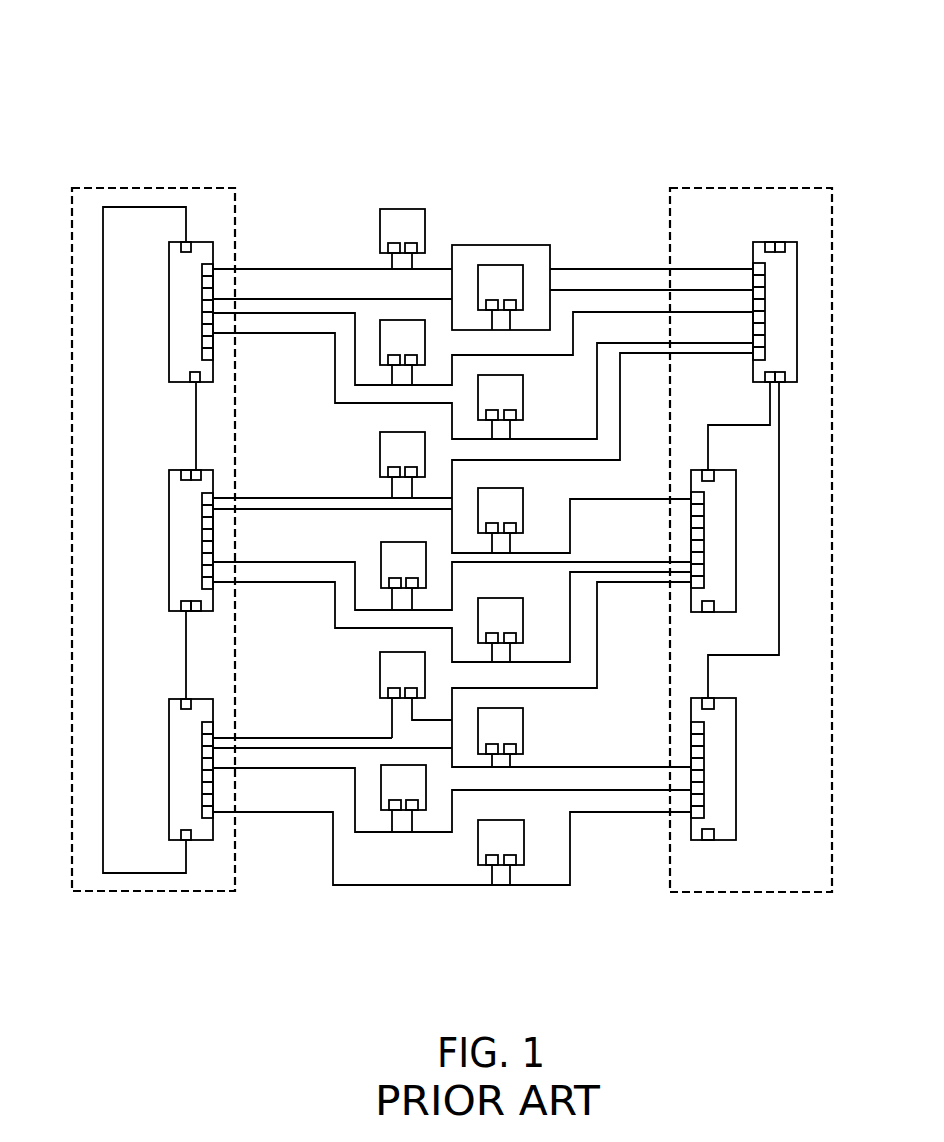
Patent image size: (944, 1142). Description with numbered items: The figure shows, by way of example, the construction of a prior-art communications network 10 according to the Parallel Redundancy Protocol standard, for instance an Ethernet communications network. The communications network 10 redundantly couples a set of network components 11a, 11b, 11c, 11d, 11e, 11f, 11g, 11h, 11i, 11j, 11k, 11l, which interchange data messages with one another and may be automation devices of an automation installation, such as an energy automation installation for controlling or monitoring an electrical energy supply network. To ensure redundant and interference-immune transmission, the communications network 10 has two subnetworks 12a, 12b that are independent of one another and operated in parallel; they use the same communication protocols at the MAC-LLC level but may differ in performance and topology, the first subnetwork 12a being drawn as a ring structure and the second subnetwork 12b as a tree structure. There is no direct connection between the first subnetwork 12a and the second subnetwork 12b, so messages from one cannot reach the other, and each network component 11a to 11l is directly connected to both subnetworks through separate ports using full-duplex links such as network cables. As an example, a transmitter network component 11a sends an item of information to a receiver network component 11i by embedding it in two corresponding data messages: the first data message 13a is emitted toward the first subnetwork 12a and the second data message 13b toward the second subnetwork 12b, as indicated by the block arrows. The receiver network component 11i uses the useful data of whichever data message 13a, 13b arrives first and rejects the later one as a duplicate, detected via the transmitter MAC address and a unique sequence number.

The communications network 10 is at (486, 85).
The network component 11a is at (403, 209).
The network component 11b is at (503, 265).
The network component 11c is at (380, 344).
The network component 11d is at (523, 384).
The network component 11e is at (380, 444).
The network component 11f is at (523, 500).
The network component 11g is at (381, 553).
The network component 11h is at (487, 594).
The network component 11i is at (380, 667).
The network component 11j is at (523, 728).
The network component 11k is at (405, 812).
The network component 11l is at (503, 868).
The first subnetwork 12a is at (147, 893).
The second subnetwork 12b is at (760, 893).
The first data message 13a is at (335, 255).
The second data message 13b is at (622, 255).